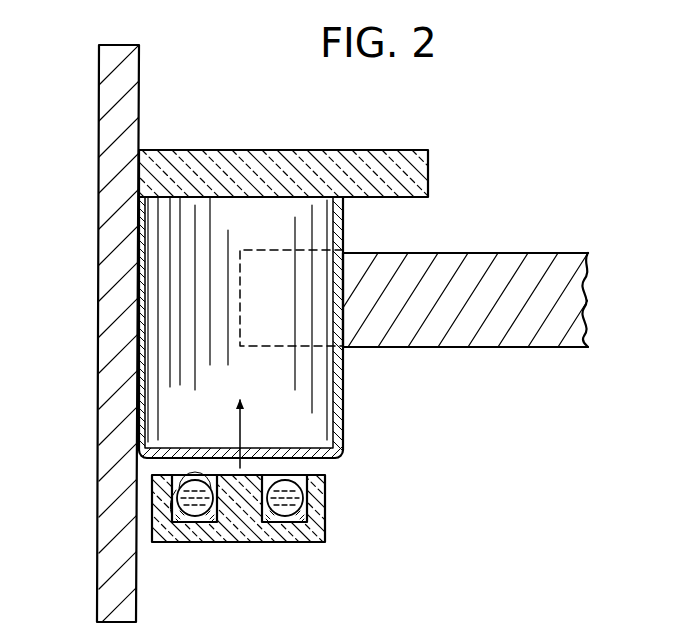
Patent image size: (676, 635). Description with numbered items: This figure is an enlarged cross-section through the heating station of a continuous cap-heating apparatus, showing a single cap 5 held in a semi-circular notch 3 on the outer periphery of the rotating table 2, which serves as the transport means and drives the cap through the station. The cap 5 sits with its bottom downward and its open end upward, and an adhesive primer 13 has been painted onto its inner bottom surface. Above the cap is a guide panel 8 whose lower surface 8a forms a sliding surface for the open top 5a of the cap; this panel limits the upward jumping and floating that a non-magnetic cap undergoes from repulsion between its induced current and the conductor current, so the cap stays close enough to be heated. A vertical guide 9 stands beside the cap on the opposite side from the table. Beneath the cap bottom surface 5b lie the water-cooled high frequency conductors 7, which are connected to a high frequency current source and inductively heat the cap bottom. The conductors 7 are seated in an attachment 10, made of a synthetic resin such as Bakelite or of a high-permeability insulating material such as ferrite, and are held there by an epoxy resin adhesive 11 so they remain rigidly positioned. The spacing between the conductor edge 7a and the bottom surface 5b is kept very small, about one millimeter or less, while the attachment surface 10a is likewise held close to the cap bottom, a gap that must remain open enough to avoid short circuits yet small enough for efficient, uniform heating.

The rotating table 2 is at (507, 328).
The semi-circular notch 3 is at (343, 342).
The cap 5 is at (350, 406).
The open top of the cap 5a is at (344, 194).
The cap bottom surface 5b is at (290, 462).
The high frequency conductor 7 is at (178, 500).
The edge of the conductor 7a is at (197, 477).
The guide panel 8 is at (397, 154).
The lower surface of the guide panel 8a is at (274, 198).
The vertical guide 9 is at (108, 107).
The attachment 10 is at (243, 550).
The surface of the attachment 10a is at (252, 468).
The epoxy resin adhesive 11 is at (190, 530).
The adhesive primer 13 is at (220, 448).